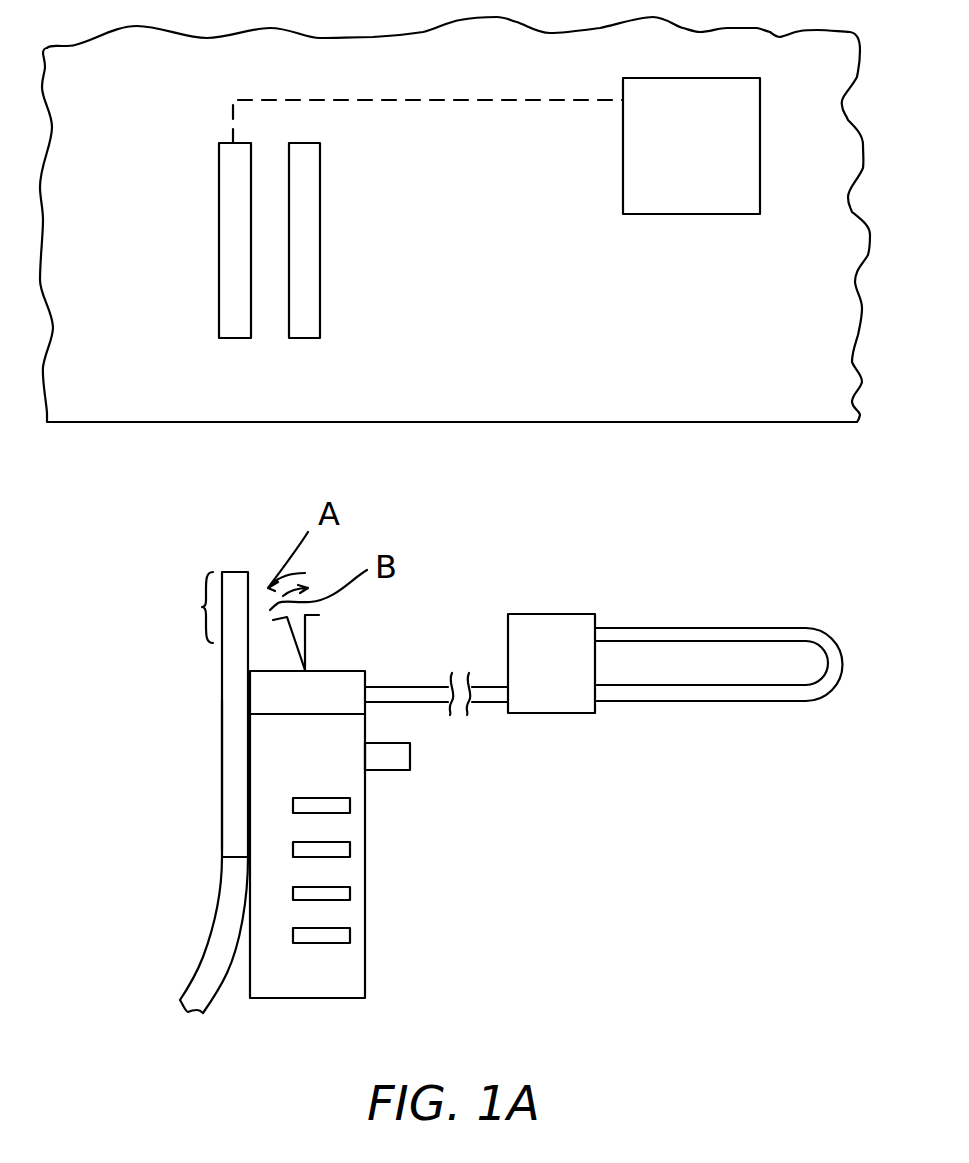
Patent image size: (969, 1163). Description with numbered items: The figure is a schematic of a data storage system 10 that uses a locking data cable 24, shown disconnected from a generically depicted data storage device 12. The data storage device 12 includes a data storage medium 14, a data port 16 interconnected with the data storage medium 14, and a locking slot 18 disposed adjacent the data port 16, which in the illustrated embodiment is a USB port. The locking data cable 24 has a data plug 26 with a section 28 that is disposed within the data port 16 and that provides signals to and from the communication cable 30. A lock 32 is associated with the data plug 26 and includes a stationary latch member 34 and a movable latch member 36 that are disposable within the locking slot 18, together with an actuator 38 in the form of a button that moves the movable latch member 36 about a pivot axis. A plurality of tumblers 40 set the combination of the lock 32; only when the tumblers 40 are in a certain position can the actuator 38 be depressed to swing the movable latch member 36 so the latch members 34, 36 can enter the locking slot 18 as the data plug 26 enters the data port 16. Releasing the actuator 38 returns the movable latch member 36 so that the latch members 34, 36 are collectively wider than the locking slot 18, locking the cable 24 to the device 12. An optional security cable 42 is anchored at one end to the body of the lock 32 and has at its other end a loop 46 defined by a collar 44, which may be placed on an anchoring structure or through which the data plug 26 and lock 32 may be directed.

The data storage system 10 is at (81, 596).
The data storage device 12 is at (720, 353).
The data storage medium 14 is at (698, 162).
The data port 16 is at (219, 239).
The locking slot 18 is at (320, 253).
The locking data cable 24 is at (155, 888).
The data plug 26 is at (218, 695).
The section 28 is at (197, 714).
The communication cable 30 is at (197, 972).
The lock 32 is at (365, 978).
The stationary latch member 34 is at (308, 635).
The movable latch member 36 is at (293, 641).
The actuator 38 is at (410, 758).
The tumblers 40 is at (350, 806).
The security cable 42 is at (418, 687).
The collar 44 is at (573, 713).
The loop 46 is at (680, 628).